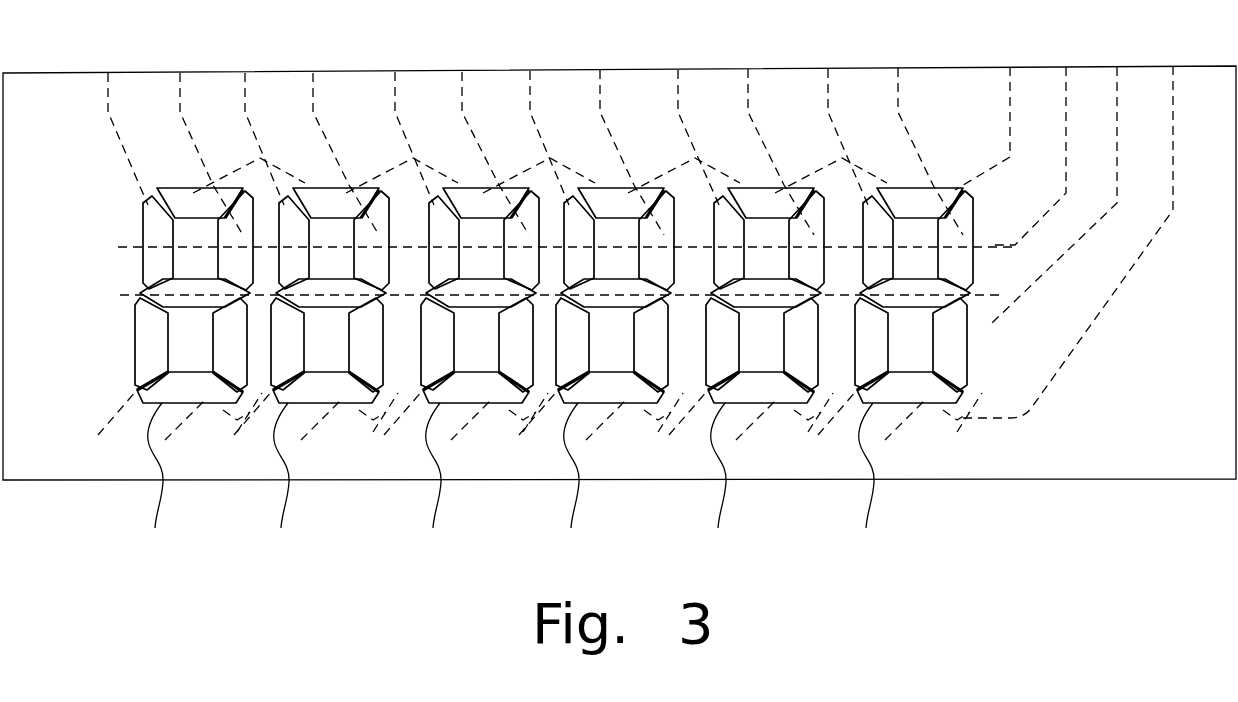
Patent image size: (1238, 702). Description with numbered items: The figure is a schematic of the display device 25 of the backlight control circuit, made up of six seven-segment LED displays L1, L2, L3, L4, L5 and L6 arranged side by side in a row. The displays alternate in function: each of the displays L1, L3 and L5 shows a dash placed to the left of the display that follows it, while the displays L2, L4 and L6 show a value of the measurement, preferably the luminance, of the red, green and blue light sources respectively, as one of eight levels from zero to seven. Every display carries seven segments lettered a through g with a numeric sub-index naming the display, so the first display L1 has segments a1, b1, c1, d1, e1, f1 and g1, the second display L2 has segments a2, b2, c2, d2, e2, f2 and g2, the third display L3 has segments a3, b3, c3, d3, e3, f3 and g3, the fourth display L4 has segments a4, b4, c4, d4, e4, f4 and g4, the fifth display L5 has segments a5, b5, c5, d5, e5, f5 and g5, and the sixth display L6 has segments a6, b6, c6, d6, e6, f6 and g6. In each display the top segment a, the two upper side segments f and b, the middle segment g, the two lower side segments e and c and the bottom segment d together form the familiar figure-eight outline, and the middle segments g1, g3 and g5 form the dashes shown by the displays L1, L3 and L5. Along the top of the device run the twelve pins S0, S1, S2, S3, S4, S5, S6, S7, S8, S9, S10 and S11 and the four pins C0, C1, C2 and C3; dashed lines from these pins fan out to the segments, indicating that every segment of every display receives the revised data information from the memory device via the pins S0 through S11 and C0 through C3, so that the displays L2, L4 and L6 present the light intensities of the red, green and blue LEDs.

The display device 25 is at (1038, 66).
The pin S0 is at (108, 138).
The pin S1 is at (189, 153).
The pin S2 is at (242, 138).
The pin S3 is at (324, 153).
The pin S4 is at (393, 138).
The pin S5 is at (474, 153).
The pin S6 is at (529, 138).
The pin S7 is at (609, 152).
The pin S8 is at (679, 137).
The pin S9 is at (759, 152).
The pin S10 is at (821, 137).
The pin S11 is at (904, 151).
The pin C0 is at (982, 128).
The pin C1 is at (1029, 156).
The pin C2 is at (1054, 195).
The pin C3 is at (1068, 242).
The seven-segment LED display L1 is at (156, 488).
The seven-segment LED display L2 is at (281, 488).
The seven-segment LED display L3 is at (431, 488).
The seven-segment LED display L4 is at (568, 488).
The seven-segment LED display L5 is at (718, 488).
The seven-segment LED display L6 is at (868, 488).
The first segment of display L1 a1 is at (200, 204).
The second segment of display L1 b1 is at (235, 240).
The third segment of display L1 c1 is at (230, 345).
The fourth segment of display L1 d1 is at (190, 387).
The fifth segment of display L1 e1 is at (151, 344).
The sixth segment of display L1 f1 is at (158, 242).
The seventh segment of display L1 g1 is at (195, 293).
The first segment of display L2 a2 is at (336, 204).
The second segment of display L2 b2 is at (371, 240).
The third segment of display L2 c2 is at (366, 345).
The fourth segment of display L2 d2 is at (326, 387).
The fifth segment of display L2 e2 is at (287, 344).
The sixth segment of display L2 f2 is at (294, 242).
The seventh segment of display L2 g2 is at (331, 293).
The first segment of display L3 a3 is at (486, 204).
The second segment of display L3 b3 is at (521, 240).
The third segment of display L3 c3 is at (516, 345).
The fourth segment of display L3 d3 is at (476, 387).
The fifth segment of display L3 e3 is at (437, 344).
The sixth segment of display L3 f3 is at (444, 242).
The seventh segment of display L3 g3 is at (481, 293).
The first segment of display L4 a4 is at (621, 204).
The second segment of display L4 b4 is at (656, 240).
The third segment of display L4 c4 is at (651, 345).
The fourth segment of display L4 d4 is at (611, 387).
The fifth segment of display L4 e4 is at (572, 344).
The sixth segment of display L4 f4 is at (579, 242).
The seventh segment of display L4 g4 is at (616, 293).
The first segment of display L5 a5 is at (771, 204).
The second segment of display L5 b5 is at (806, 240).
The third segment of display L5 c5 is at (801, 345).
The fourth segment of display L5 d5 is at (761, 387).
The fifth segment of display L5 e5 is at (722, 344).
The sixth segment of display L5 f5 is at (729, 242).
The seventh segment of display L5 g5 is at (766, 293).
The first segment of display L6 a6 is at (920, 204).
The second segment of display L6 b6 is at (955, 240).
The third segment of display L6 c6 is at (950, 345).
The fourth segment of display L6 d6 is at (910, 387).
The fifth segment of display L6 e6 is at (871, 344).
The sixth segment of display L6 f6 is at (878, 242).
The seventh segment of display L6 g6 is at (915, 293).